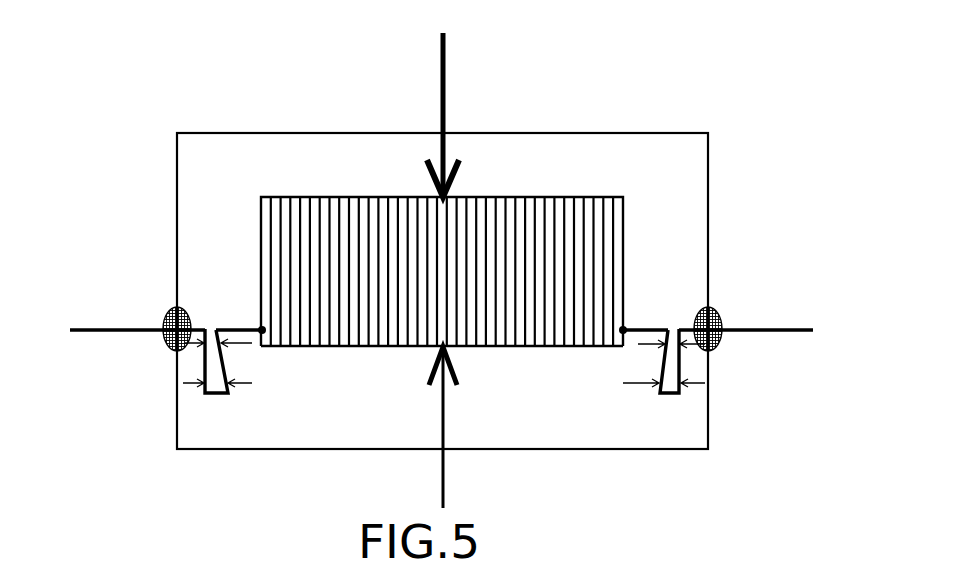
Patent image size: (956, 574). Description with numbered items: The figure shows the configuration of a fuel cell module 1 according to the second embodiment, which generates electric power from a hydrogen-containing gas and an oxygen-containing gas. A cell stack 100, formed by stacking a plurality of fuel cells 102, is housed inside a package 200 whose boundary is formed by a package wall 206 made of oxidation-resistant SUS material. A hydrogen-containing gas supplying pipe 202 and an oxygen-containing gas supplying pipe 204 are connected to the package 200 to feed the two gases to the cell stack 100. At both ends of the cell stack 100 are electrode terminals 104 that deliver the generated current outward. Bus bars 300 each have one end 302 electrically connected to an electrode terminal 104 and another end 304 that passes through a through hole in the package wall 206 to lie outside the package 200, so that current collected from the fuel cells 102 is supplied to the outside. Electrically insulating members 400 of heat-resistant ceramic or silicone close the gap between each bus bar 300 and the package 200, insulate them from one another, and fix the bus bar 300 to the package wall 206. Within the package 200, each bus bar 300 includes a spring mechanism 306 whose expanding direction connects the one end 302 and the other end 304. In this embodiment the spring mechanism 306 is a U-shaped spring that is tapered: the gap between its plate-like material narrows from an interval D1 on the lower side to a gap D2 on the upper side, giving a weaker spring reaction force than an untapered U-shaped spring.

The fuel cell module 1 is at (615, 62).
The cell stack 100 is at (560, 193).
The fuel cells 102 is at (355, 346).
The electrode terminals 104 is at (262, 330).
The package 200 is at (698, 125).
The hydrogen-containing gas supplying pipe 202 is at (445, 72).
The oxygen-containing gas supplying pipe 204 is at (445, 482).
The package wall 206 is at (283, 132).
The bus bars 300 is at (148, 335).
The one end 302 is at (262, 348).
The other end 304 is at (133, 329).
The spring mechanism 306 is at (217, 394).
The electrically insulating members 400 is at (173, 308).
The interval D1 is at (444, 396).
The gap D2 is at (445, 357).